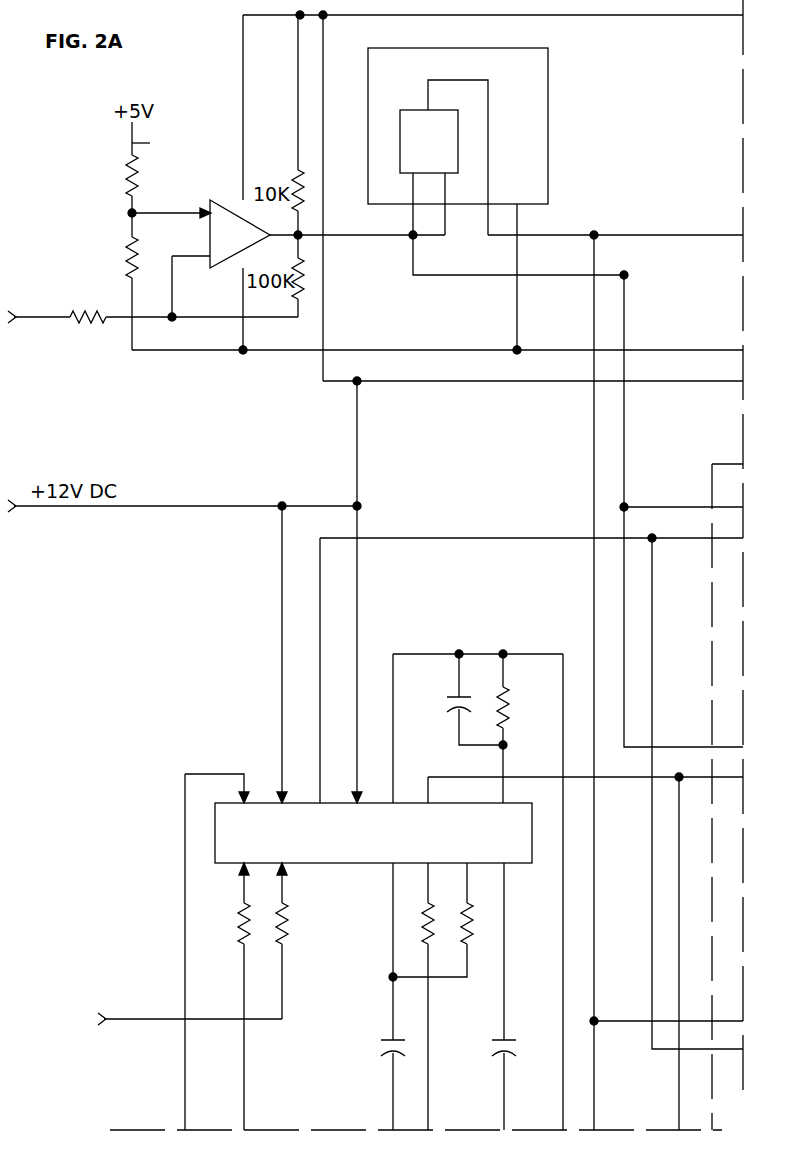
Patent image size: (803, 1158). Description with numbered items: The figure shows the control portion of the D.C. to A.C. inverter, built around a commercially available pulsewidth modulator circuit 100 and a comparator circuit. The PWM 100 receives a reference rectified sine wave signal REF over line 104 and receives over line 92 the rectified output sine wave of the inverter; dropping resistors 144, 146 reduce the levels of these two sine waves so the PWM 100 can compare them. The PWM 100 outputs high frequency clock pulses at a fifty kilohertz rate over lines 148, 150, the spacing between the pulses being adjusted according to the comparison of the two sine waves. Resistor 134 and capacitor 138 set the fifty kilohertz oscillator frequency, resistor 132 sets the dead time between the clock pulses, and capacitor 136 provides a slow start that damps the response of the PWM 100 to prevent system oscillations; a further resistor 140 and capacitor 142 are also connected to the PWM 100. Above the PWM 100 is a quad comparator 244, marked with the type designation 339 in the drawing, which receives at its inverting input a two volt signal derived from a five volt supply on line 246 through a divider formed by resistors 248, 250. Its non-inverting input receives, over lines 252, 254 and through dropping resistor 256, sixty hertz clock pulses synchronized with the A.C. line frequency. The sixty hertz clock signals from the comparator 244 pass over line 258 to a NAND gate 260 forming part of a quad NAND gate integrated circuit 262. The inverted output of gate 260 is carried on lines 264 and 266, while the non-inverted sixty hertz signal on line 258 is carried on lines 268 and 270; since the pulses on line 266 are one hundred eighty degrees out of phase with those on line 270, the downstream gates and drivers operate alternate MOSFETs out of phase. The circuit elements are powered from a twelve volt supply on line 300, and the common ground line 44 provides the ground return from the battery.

The common ground line 44 is at (293, 353).
The line 92 is at (243, 1060).
The pulsewidth modulator circuit 100 is at (225, 822).
The line 104 is at (170, 1022).
The resistor 132 is at (472, 920).
The resistor 134 is at (423, 921).
The capacitor 136 is at (500, 1040).
The capacitor 138 is at (388, 1040).
The resistor 140 is at (506, 692).
The capacitor 142 is at (455, 720).
The dropping resistor 144 is at (241, 908).
The dropping resistor 146 is at (287, 908).
The line 148 is at (475, 537).
The line 150 is at (613, 777).
The quad comparator 244 is at (240, 205).
The line 246 is at (150, 143).
The resistor 248 is at (131, 160).
The resistor 250 is at (131, 244).
The line 252 is at (33, 320).
The line 254 is at (172, 295).
The dropping resistor 256 is at (93, 322).
The line 258 is at (392, 236).
The NAND gate 260 is at (413, 118).
The quad NAND gate integrated circuit 262 is at (496, 48).
The line 264 is at (488, 143).
The line 266 is at (593, 302).
The line 268 is at (450, 277).
The line 270 is at (625, 327).
The line 300 is at (651, 18).
The comparator type 339 is at (212, 236).